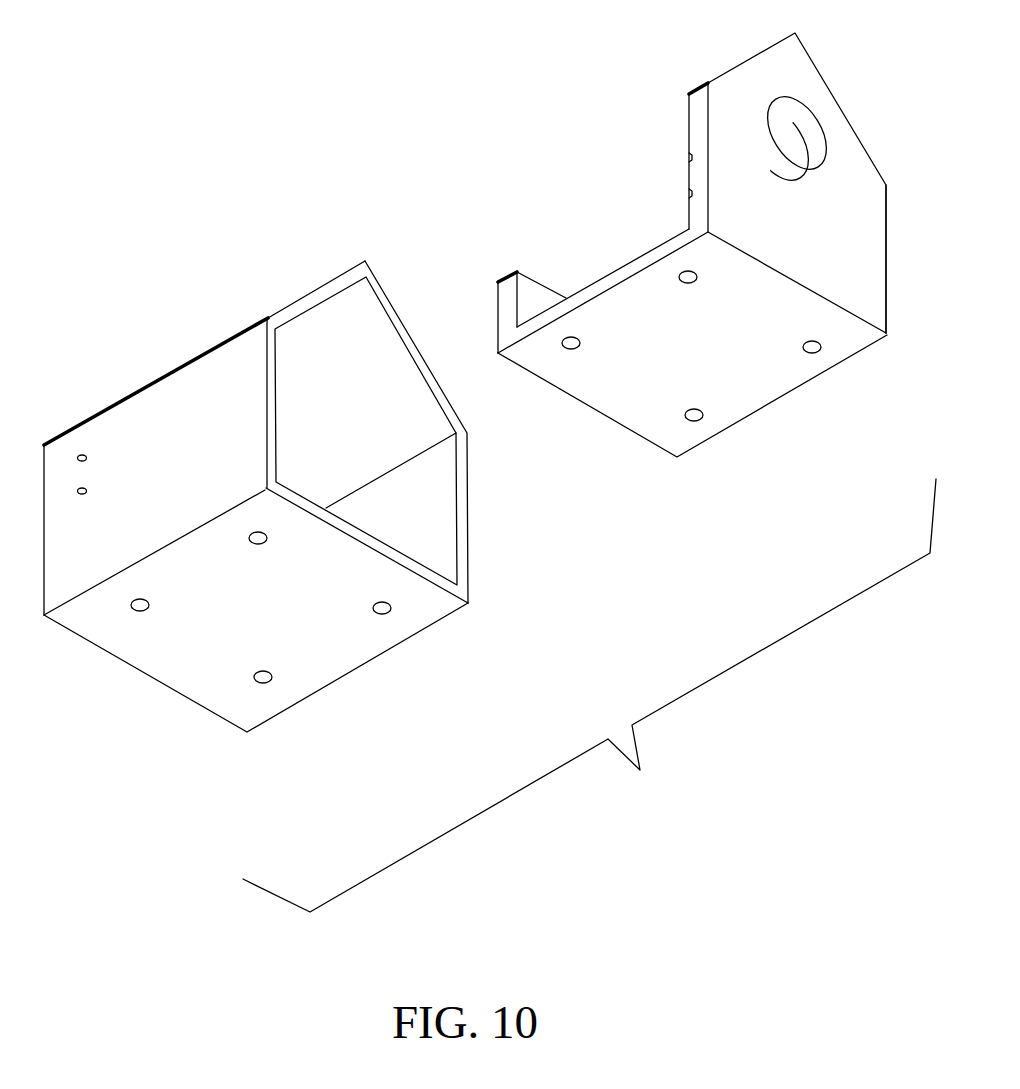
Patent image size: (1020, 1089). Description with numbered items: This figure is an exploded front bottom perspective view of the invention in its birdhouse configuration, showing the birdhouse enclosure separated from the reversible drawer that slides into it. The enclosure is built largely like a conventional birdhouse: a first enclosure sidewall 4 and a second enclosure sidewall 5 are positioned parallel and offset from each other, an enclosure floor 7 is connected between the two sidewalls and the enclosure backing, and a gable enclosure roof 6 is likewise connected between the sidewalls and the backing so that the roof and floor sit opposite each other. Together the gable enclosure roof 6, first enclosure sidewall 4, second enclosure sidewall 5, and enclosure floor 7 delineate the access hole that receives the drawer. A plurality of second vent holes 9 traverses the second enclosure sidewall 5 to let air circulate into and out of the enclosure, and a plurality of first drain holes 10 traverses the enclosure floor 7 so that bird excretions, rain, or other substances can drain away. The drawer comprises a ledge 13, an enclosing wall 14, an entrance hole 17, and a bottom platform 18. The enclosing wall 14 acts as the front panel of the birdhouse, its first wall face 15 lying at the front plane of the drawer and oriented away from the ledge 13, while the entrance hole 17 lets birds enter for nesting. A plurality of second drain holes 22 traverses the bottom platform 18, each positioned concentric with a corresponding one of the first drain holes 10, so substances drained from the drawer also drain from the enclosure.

The first enclosure sidewall 4 is at (283, 489).
The second enclosure sidewall 5 is at (204, 438).
The gable enclosure roof 6 is at (318, 293).
The enclosure floor 7 is at (256, 620).
The plurality of second vent holes 9 is at (84, 458).
The plurality of first drain holes 10 is at (258, 540).
The ledge 13 is at (505, 306).
The enclosing wall 14 is at (875, 233).
The first wall face 15 is at (824, 183).
The entrance hole 17 is at (806, 138).
The bottom platform 18 is at (652, 351).
The plurality of second drain holes 22 is at (689, 279).